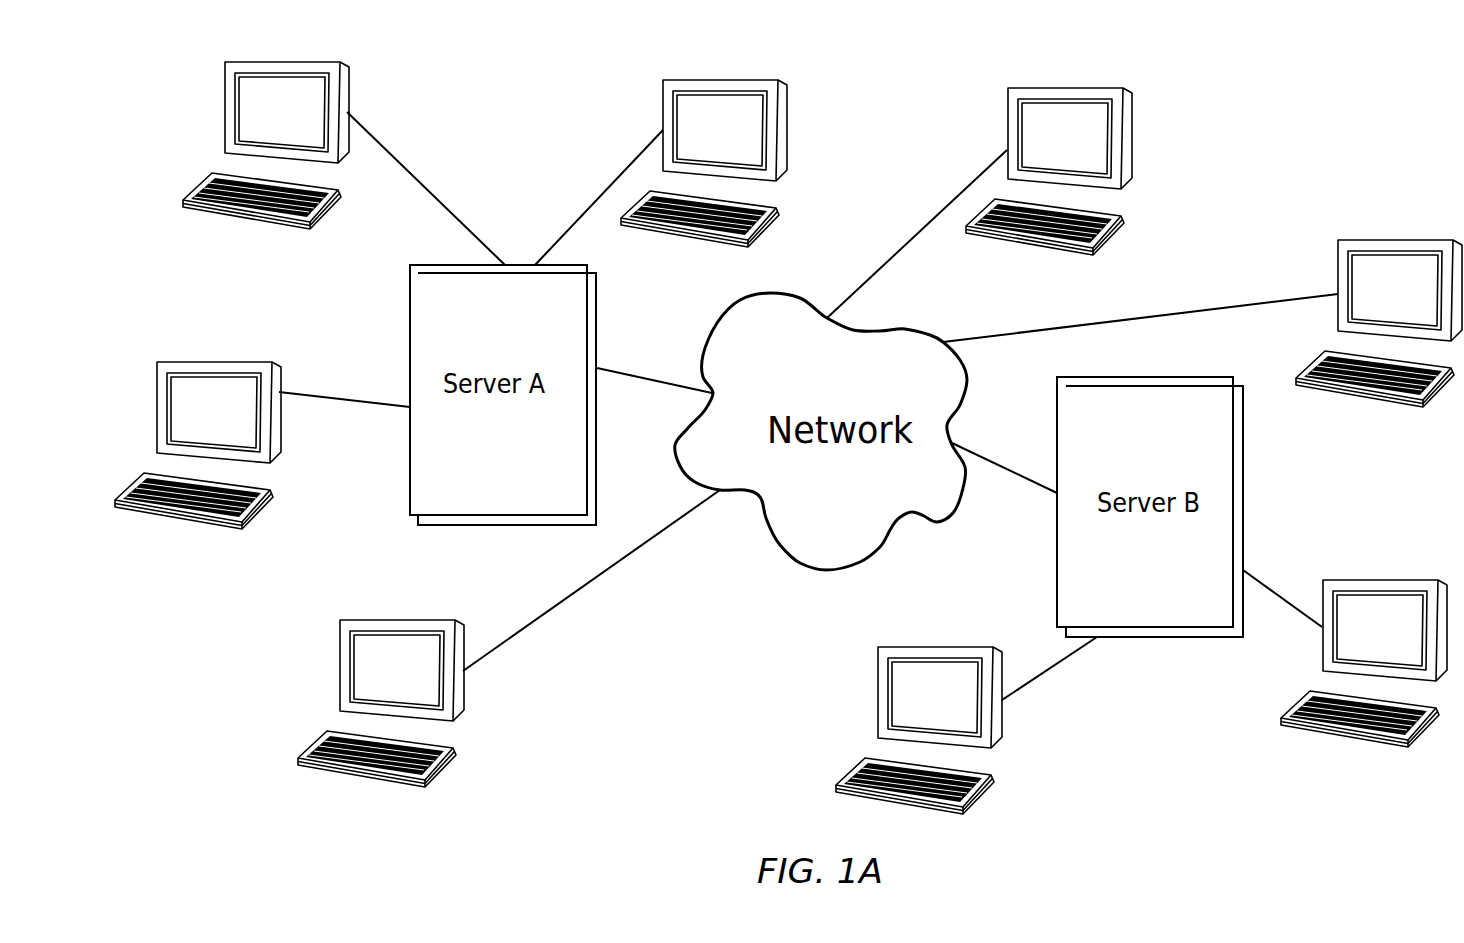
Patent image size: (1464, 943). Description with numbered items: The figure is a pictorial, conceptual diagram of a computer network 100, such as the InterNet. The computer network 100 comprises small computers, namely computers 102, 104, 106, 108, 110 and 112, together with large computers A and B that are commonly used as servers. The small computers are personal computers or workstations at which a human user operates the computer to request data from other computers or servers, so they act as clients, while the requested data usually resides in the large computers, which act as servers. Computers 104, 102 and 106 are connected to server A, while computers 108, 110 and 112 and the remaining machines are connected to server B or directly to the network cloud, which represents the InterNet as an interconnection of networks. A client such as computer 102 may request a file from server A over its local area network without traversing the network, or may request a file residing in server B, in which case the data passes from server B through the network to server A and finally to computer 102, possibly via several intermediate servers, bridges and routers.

The computer network 100 is at (1303, 122).
The computer 102 is at (760, 80).
The computer 104 is at (345, 77).
The computer 106 is at (237, 362).
The computer 108 is at (1095, 88).
The computer 110 is at (953, 645).
The computer 112 is at (1380, 580).